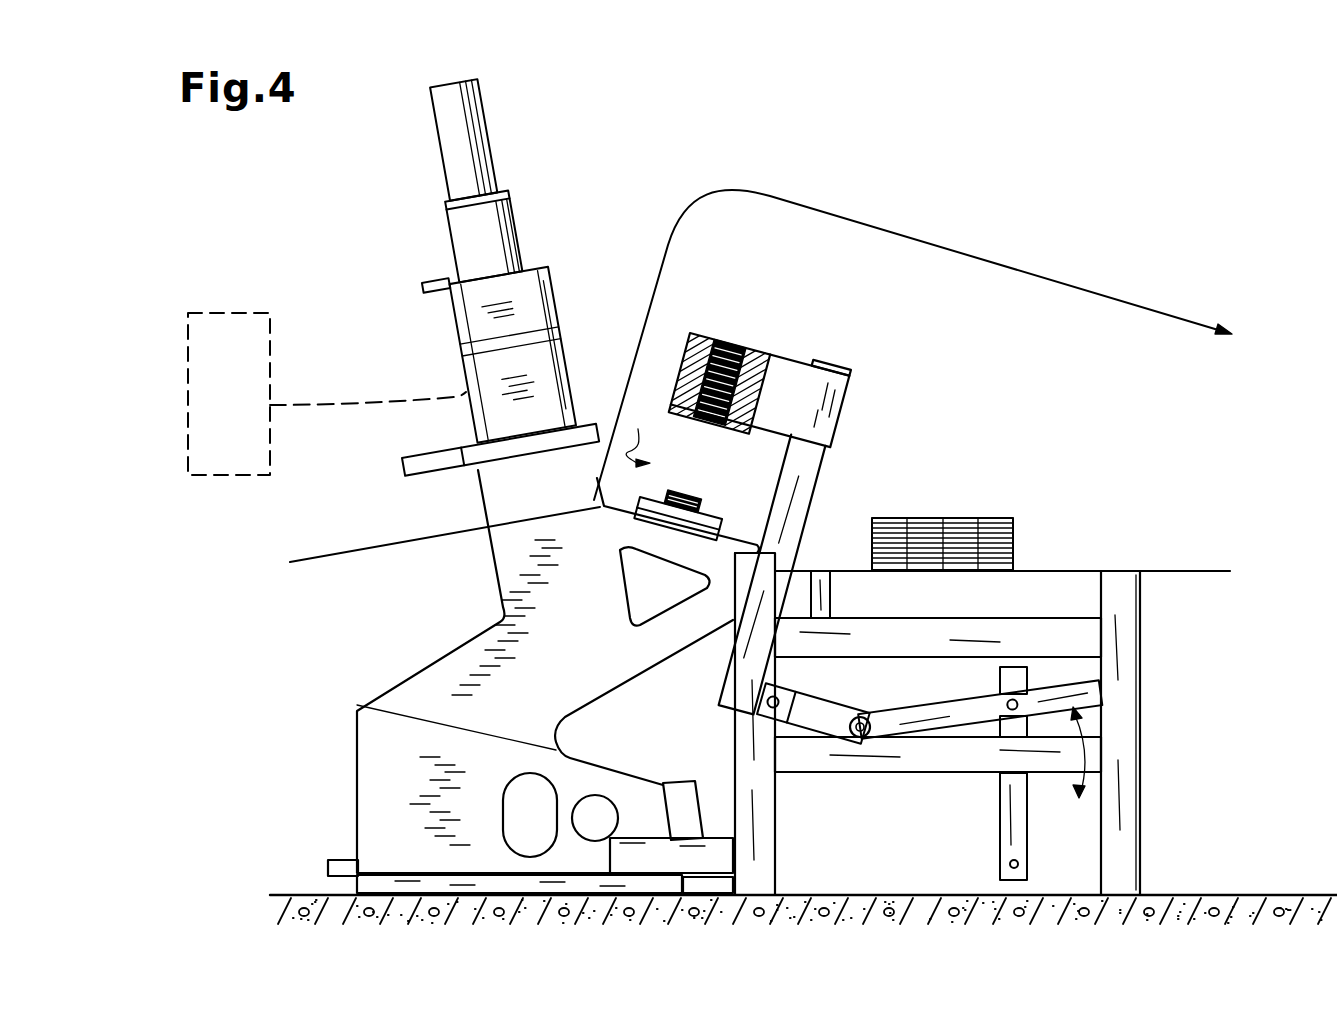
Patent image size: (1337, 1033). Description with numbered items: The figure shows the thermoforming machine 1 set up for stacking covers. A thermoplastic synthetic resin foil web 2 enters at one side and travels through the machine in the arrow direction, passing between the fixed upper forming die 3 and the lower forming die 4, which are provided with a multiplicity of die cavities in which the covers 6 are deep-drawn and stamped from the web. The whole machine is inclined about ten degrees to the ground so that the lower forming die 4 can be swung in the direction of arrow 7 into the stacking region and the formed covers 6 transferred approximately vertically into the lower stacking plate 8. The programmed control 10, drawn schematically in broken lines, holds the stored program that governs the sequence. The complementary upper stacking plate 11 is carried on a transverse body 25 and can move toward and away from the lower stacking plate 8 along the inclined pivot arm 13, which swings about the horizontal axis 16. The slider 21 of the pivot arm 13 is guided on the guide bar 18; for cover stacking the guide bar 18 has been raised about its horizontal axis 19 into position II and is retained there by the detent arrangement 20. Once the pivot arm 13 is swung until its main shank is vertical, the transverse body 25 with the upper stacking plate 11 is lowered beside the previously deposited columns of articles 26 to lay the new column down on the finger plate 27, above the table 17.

The thermoforming machine 1 is at (607, 311).
The thermoplastic synthetic resin foil web 2 is at (1068, 284).
The upper forming die 3 is at (528, 282).
The lower forming die 4 is at (497, 497).
The covers 6 is at (738, 360).
The arrow 7 is at (638, 437).
The lower stacking plate 8 is at (716, 512).
The programmed control 10 is at (236, 322).
The upper stacking plate 11 is at (674, 407).
The pivot arm 13 is at (800, 500).
The horizontal axis 16 is at (768, 707).
The table 17 is at (1076, 568).
The guide bar 18 is at (945, 722).
The horizontal axis 19 is at (862, 737).
The detent arrangement 20 is at (1010, 713).
The slider 21 is at (837, 717).
The transverse body 25 is at (698, 335).
The columns of articles 26 is at (753, 396).
The finger plate 27 is at (831, 601).